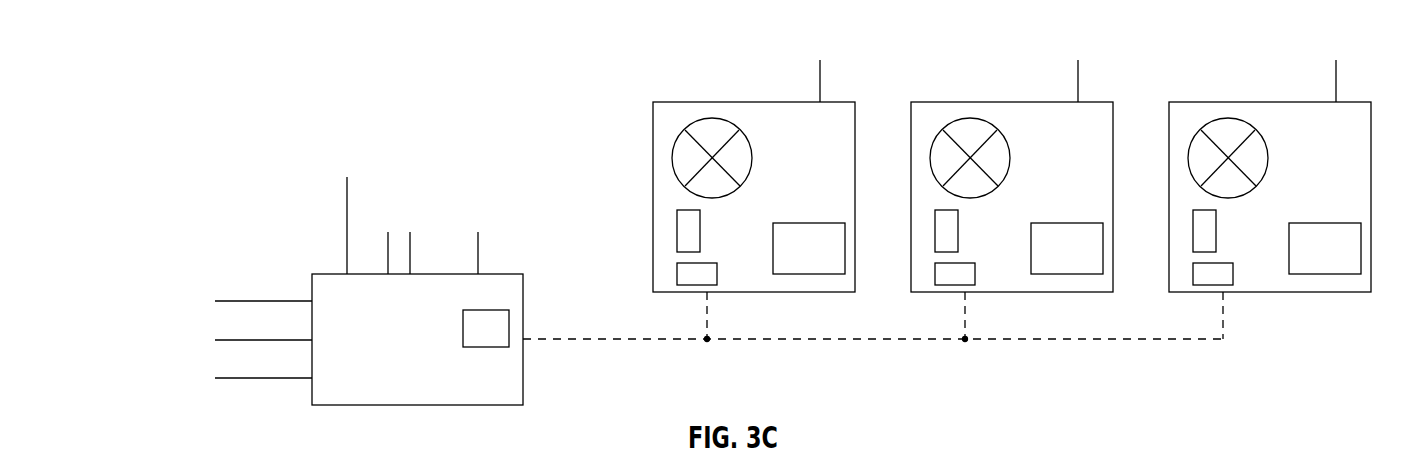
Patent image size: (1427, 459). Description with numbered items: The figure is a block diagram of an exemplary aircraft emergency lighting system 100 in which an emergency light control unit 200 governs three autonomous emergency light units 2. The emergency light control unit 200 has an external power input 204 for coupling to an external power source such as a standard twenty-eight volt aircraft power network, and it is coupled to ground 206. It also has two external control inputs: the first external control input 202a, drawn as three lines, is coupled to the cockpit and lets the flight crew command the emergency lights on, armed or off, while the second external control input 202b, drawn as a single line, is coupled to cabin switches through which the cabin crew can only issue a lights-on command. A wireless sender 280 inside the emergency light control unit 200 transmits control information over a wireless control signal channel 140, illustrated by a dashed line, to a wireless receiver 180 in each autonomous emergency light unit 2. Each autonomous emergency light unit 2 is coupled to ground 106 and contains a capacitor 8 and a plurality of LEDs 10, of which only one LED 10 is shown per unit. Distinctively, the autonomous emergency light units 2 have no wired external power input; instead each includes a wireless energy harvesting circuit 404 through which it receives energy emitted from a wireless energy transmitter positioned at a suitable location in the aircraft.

The emergency lighting system 100 is at (169, 88).
The emergency light control unit 200 is at (523, 368).
The first external control input 202a is at (207, 294).
The second external control input 202b is at (345, 230).
The external power input 204 is at (400, 235).
The ground 206 is at (480, 253).
The wireless sender 280 is at (463, 330).
The wireless control signal channel 140 is at (587, 337).
The autonomous emergency light unit 2 is at (700, 102).
The ground 106 is at (818, 86).
The LED 10 is at (752, 160).
The capacitor 8 is at (810, 222).
The wireless energy harvesting circuit 404 is at (700, 222).
The wireless receiver 180 is at (717, 272).